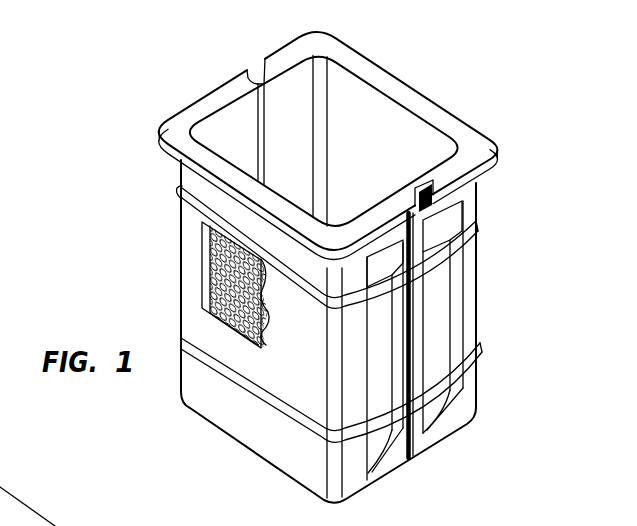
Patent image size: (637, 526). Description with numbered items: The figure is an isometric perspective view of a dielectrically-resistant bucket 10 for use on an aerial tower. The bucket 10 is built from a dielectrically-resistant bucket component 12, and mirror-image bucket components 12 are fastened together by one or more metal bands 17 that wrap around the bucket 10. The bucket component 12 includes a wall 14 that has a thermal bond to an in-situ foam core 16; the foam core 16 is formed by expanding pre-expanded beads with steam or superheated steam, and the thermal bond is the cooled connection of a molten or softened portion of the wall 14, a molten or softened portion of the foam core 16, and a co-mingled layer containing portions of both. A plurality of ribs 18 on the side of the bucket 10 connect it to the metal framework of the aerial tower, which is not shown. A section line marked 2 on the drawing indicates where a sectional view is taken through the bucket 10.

The dielectrically-resistant bucket 10 is at (121, 125).
The dielectrically-resistant bucket component 12 is at (253, 423).
The wall 14 is at (203, 288).
The in-situ foam core 16 is at (223, 262).
The metal band 17 is at (182, 182).
The rib 18 is at (462, 288).
The section line 2- 2 is at (494, 187).